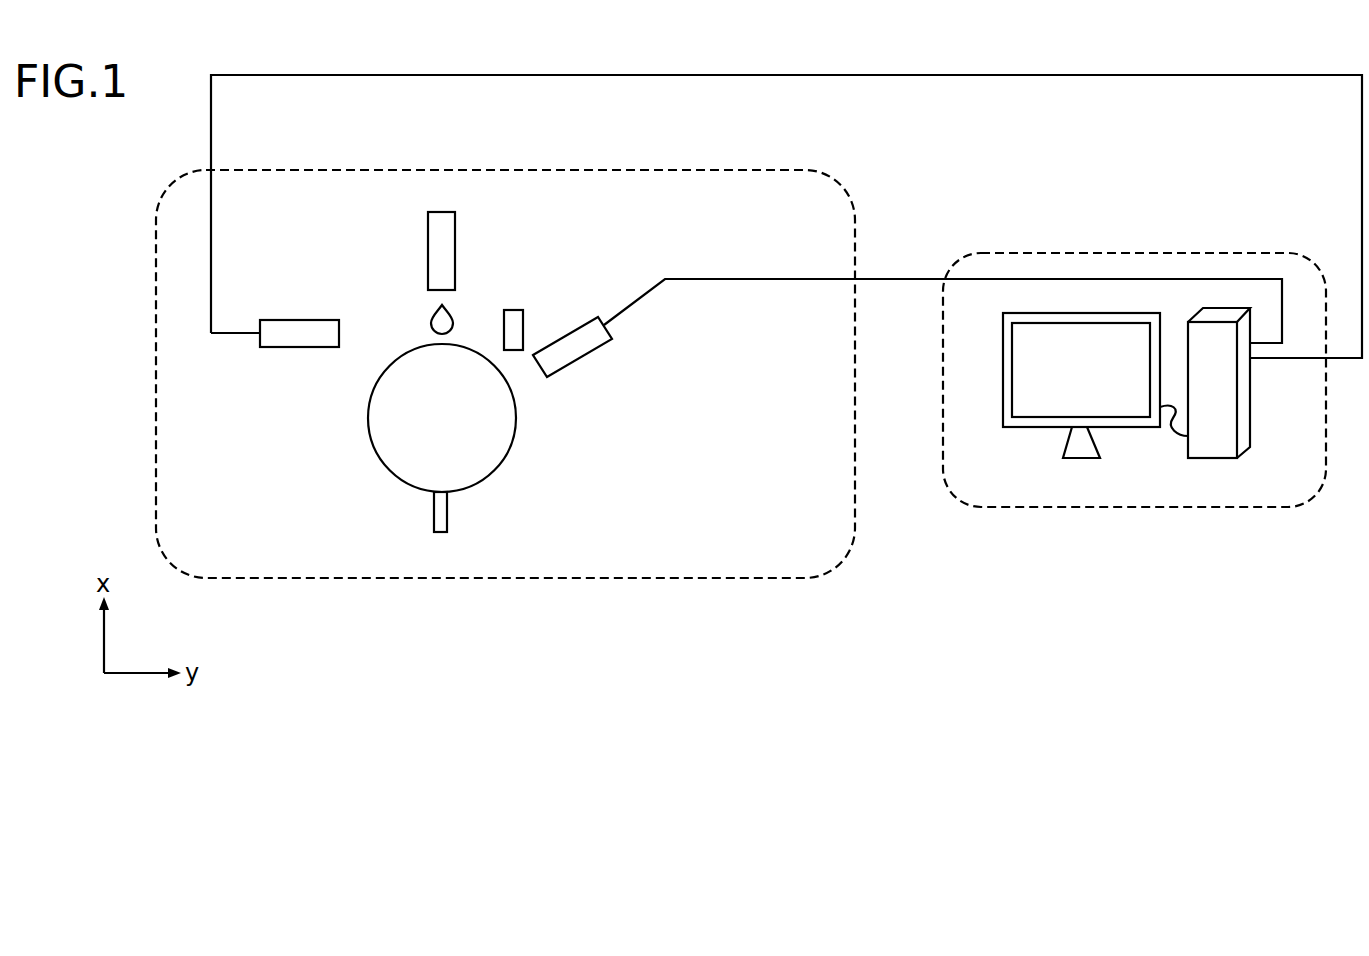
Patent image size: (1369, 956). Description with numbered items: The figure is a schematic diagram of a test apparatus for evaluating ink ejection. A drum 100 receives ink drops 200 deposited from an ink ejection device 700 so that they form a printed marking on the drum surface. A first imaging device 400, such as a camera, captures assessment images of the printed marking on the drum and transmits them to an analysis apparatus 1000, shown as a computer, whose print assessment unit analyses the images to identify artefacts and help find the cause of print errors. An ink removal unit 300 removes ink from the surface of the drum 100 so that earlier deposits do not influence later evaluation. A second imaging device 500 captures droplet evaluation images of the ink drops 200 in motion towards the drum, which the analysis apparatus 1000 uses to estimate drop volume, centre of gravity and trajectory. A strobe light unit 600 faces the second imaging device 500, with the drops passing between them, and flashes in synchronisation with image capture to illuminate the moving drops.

The drum 100 is at (516, 419).
The ink drops 200 is at (432, 318).
The ink removal unit 300 is at (434, 526).
The first imaging device 400 is at (600, 343).
The second imaging device 500 is at (300, 320).
The strobe light unit 600 is at (513, 310).
The ink ejection device 700 is at (455, 228).
The analysis apparatus 1000 is at (1036, 252).